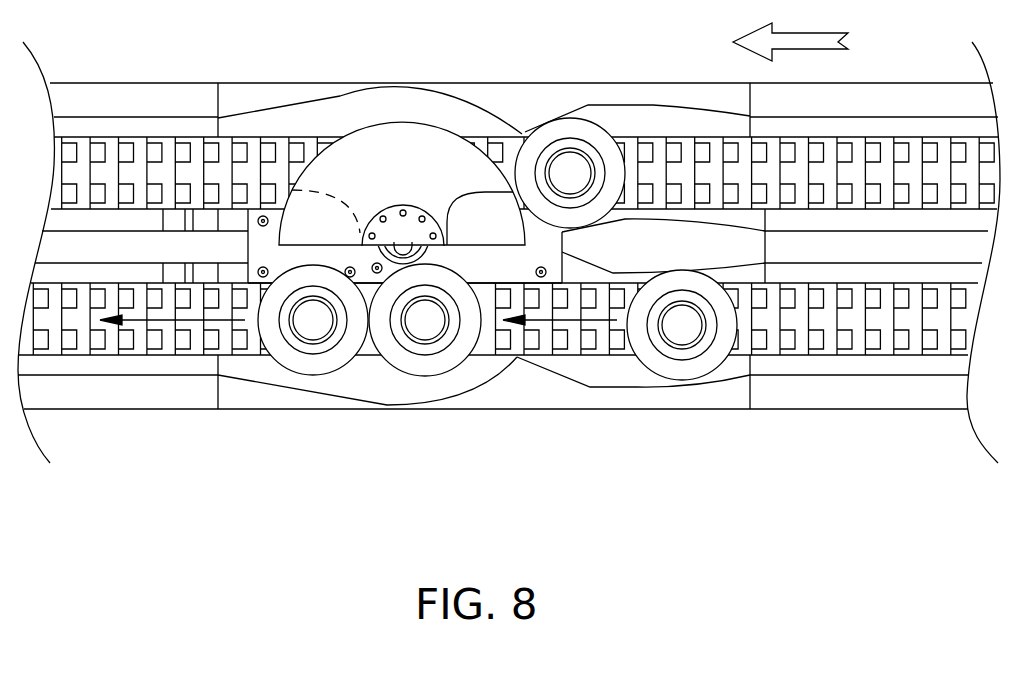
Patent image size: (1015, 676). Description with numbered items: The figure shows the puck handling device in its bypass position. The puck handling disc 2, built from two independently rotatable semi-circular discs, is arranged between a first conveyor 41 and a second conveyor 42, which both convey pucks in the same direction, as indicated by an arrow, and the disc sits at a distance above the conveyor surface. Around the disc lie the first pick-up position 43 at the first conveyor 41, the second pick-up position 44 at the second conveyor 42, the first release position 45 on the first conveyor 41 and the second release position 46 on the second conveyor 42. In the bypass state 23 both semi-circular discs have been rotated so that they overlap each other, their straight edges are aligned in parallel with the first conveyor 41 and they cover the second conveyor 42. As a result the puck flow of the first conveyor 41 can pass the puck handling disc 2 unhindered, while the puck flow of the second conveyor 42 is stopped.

The puck handling disc 2 is at (409, 396).
The bypass state 23 is at (371, 122).
The first conveyor 41 is at (175, 341).
The second conveyor 42 is at (173, 152).
The first pick-up position 43 is at (506, 401).
The second pick-up position 44 is at (547, 92).
The first release position 45 is at (285, 399).
The second release position 46 is at (283, 92).